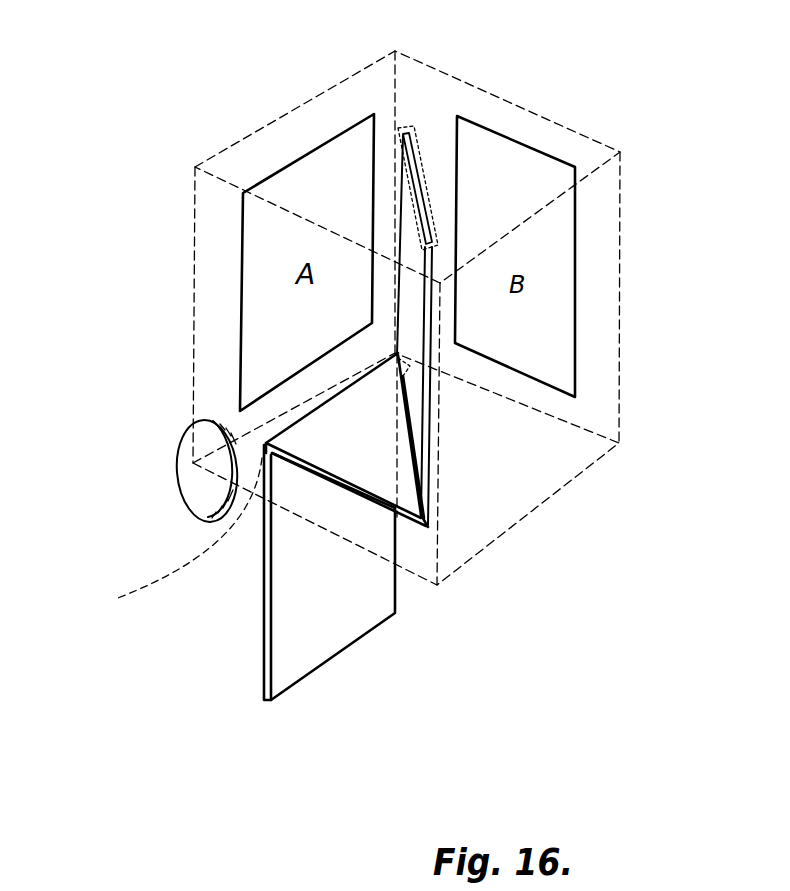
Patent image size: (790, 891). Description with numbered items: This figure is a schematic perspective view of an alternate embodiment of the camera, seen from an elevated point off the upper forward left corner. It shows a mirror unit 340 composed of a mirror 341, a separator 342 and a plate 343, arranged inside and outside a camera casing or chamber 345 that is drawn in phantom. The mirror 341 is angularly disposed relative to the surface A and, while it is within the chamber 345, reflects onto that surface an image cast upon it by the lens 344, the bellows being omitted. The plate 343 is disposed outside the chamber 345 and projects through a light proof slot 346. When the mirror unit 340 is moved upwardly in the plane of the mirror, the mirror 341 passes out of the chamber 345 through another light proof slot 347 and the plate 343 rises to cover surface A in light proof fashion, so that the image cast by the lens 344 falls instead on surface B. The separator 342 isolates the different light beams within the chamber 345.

The mirror unit 340 is at (430, 528).
The mirror 341 is at (423, 420).
The separator 342 is at (365, 503).
The plate 343 is at (265, 643).
The lens 344 is at (197, 482).
The camera casing or chamber 345 is at (620, 290).
The light proof slot 346 is at (165, 537).
The light proof slot 347 is at (412, 135).